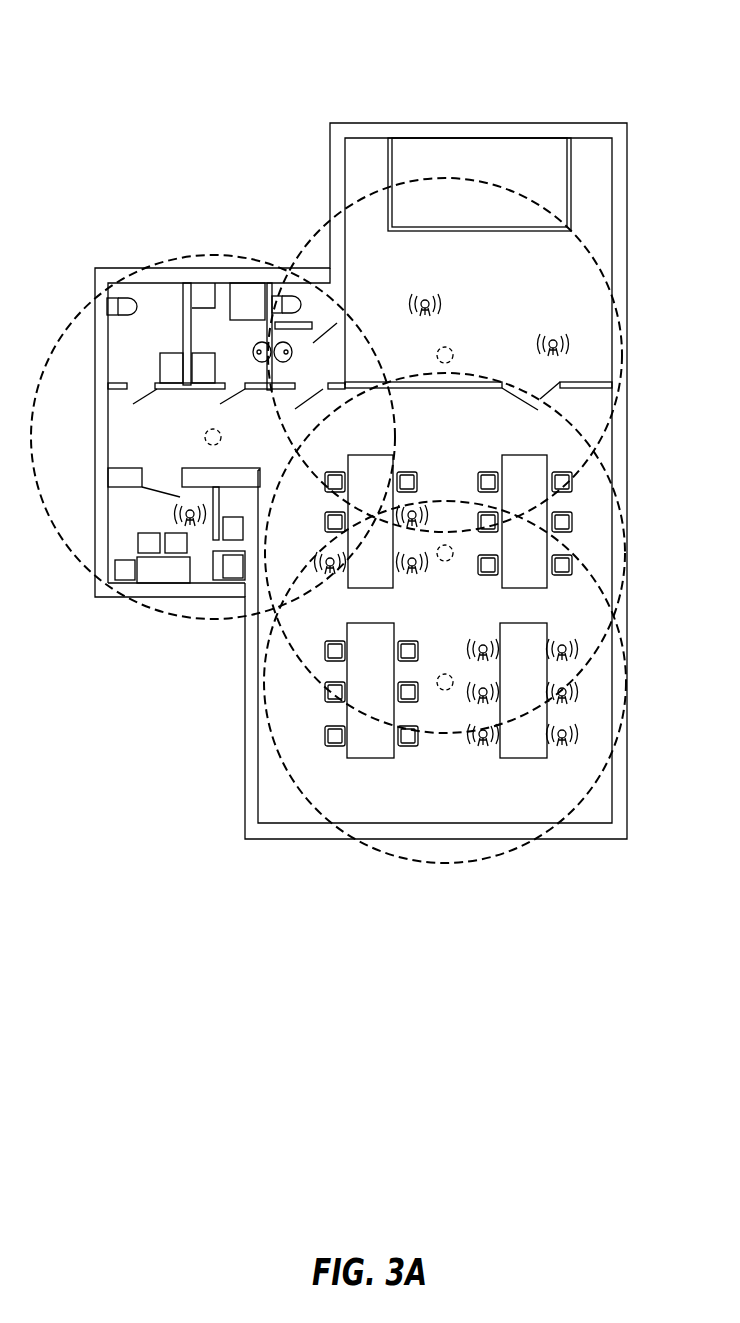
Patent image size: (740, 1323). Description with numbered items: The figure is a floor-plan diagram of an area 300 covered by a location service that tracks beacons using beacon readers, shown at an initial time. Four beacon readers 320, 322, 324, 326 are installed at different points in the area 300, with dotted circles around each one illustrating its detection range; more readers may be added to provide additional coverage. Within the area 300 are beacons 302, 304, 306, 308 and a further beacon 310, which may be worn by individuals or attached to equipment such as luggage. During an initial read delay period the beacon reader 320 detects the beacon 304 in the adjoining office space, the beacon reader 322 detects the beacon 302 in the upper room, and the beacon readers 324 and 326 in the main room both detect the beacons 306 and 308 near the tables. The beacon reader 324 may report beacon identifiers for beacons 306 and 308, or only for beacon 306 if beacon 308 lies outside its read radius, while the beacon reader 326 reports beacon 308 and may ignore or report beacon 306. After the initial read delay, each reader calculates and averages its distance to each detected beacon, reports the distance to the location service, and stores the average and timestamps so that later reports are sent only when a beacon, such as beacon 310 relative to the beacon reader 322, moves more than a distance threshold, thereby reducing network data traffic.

The area 300 is at (648, 45).
The beacon 302 is at (440, 308).
The beacon 304 is at (170, 522).
The beacon 306 is at (416, 516).
The beacon 308 is at (569, 636).
The beacon 310 is at (575, 346).
The beacon reader 320 is at (204, 440).
The beacon reader 322 is at (454, 358).
The beacon reader 324 is at (452, 543).
The beacon reader 326 is at (444, 674).